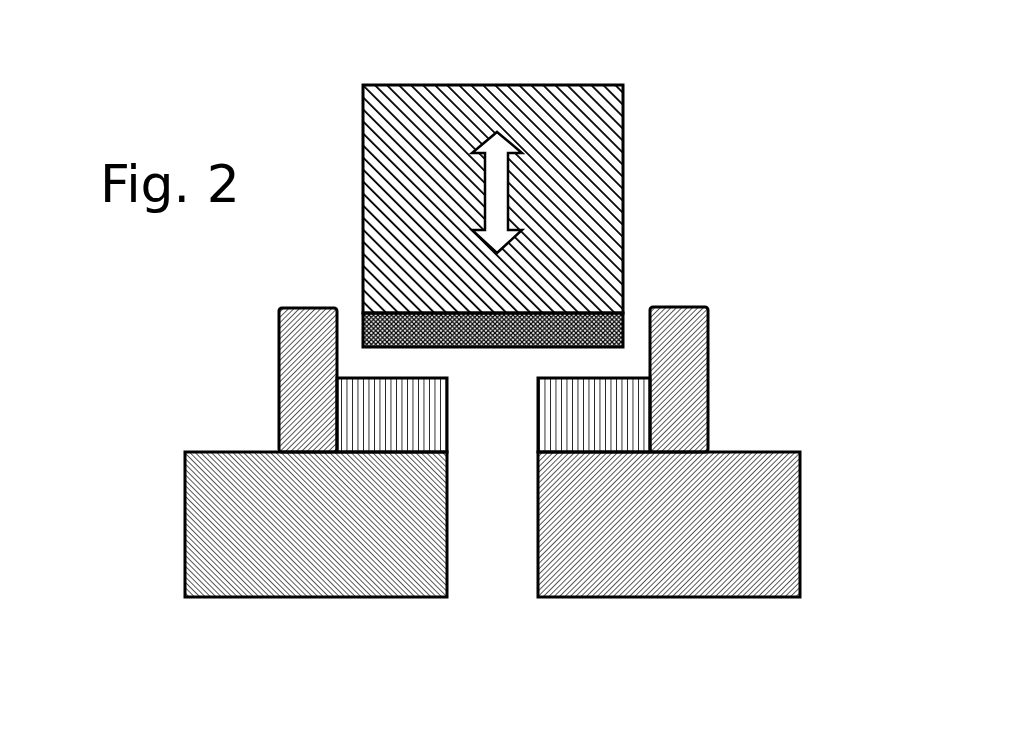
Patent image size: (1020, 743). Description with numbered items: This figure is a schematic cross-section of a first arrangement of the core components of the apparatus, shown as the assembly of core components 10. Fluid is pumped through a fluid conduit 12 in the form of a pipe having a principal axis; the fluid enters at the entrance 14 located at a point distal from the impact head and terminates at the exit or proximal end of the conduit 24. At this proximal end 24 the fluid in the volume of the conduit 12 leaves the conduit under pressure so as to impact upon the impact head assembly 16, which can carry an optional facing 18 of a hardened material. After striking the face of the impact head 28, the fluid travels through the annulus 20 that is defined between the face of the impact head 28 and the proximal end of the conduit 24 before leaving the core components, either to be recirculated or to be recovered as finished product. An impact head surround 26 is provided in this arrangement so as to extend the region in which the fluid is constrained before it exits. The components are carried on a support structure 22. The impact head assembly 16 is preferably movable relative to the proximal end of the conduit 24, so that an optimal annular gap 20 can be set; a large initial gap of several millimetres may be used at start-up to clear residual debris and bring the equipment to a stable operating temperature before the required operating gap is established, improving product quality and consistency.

The assembly of core components 10 is at (775, 65).
The fluid conduit/volume 12 is at (505, 510).
The entrance to fluid conduit 14 is at (487, 612).
The impact head assembly 16 is at (608, 152).
The facing of impact head assembly 18 is at (573, 330).
The annulus 20 is at (375, 365).
The support structure 22 is at (213, 530).
The exit of fluid conduit / proximal end of the conduit 24 is at (630, 435).
The impact head surround 26 is at (680, 370).
The face of the impact head 28 is at (497, 353).